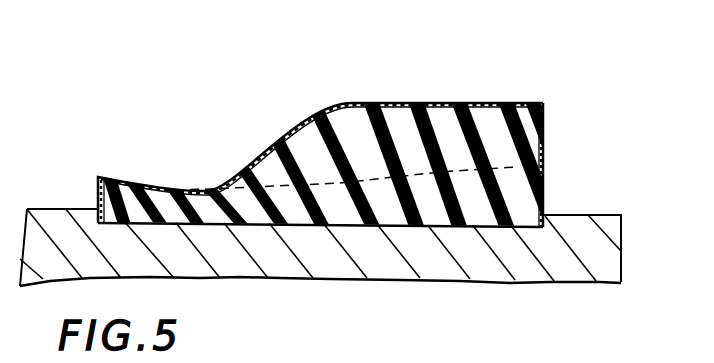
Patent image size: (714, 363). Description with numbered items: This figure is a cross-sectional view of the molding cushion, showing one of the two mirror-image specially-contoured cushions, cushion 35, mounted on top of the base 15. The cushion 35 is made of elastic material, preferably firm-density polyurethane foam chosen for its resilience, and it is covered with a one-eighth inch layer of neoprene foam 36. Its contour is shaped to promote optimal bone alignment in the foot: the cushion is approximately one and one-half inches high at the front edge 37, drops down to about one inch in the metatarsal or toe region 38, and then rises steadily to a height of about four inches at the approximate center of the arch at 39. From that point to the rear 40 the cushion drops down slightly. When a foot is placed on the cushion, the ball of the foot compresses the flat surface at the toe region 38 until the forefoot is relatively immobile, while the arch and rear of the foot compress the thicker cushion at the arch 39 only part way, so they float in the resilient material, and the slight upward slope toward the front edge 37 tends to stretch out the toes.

The base 15 is at (622, 262).
The cushion 35 is at (548, 152).
The layer of neoprene foam 36 is at (313, 115).
The front edge 37 is at (98, 192).
The metatarsal or toe region 38 is at (206, 189).
The center of the arch 39 is at (330, 104).
The rear 40 is at (546, 103).